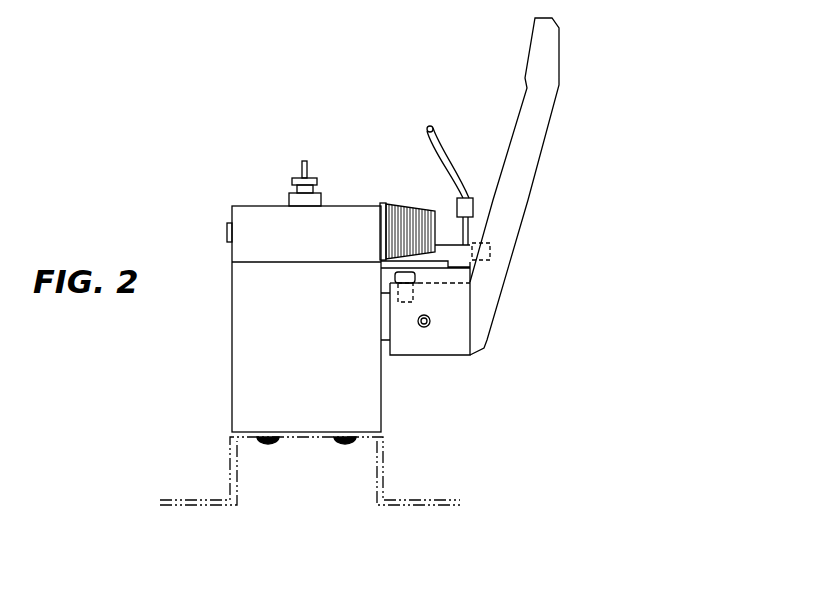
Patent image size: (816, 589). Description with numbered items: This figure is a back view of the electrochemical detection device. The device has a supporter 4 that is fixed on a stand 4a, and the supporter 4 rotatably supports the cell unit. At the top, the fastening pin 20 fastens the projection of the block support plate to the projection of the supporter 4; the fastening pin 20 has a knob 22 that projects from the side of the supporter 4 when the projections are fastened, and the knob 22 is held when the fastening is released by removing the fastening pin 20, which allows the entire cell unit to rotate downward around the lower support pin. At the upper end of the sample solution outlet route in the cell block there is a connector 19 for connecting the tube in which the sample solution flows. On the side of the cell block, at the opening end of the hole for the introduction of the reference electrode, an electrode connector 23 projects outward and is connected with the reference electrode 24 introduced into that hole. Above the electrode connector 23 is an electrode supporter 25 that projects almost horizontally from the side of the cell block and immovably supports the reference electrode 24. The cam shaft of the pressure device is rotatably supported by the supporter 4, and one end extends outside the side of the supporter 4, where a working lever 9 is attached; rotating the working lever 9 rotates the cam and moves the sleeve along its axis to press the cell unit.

The supporter 4 is at (245, 362).
The stand 4a is at (383, 450).
The working lever 9 is at (523, 175).
The connector 19 is at (307, 162).
The fastening pin 20 is at (227, 230).
The knob 22 is at (392, 203).
The electrode connector 23 is at (413, 278).
The reference electrode 24 is at (470, 223).
The electrode supporter 25 is at (448, 245).